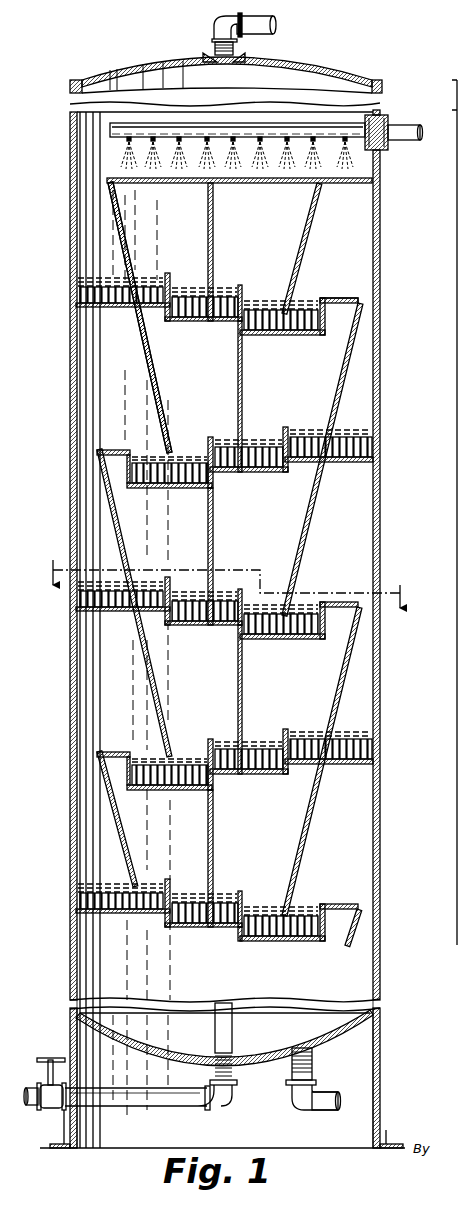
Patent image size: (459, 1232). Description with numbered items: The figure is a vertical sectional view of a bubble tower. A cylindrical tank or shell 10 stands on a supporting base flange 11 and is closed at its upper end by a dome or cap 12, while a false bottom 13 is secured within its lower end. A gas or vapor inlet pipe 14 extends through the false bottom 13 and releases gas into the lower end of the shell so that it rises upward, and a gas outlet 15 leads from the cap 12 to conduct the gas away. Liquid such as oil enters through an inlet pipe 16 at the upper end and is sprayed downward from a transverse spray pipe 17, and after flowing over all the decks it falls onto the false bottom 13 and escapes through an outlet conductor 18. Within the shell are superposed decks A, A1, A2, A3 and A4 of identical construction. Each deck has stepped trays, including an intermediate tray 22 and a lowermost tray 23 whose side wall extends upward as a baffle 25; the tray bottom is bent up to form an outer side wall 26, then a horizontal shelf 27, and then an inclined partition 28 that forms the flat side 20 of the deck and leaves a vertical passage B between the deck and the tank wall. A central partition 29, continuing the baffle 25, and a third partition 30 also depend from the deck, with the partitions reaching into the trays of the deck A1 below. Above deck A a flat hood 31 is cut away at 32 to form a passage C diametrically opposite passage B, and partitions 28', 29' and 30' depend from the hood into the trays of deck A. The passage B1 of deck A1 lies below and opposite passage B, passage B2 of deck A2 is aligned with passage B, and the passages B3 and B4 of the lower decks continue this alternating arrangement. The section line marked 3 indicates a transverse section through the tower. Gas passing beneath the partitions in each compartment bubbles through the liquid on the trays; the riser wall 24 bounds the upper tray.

The tank or shell 10 is at (378, 360).
The supporting base flange 11 is at (387, 1138).
The dome or cap 12 is at (335, 70).
The false bottom 13 is at (165, 1050).
The gas or vapor inlet pipe 14 is at (168, 1103).
The gas outlet 15 is at (270, 32).
The inlet pipe 16 is at (395, 125).
The spray pipe 17 is at (262, 130).
The outlet conductor 18 is at (328, 1097).
The flat side 20 is at (383, 330).
The intermediate tray 22 is at (202, 322).
The lowermost tray 23 is at (278, 337).
The riser wall 24 is at (168, 272).
The baffle 25 is at (243, 286).
The outer side wall 26 is at (322, 333).
The shelf 27 is at (333, 298).
The inclined partition 28 is at (325, 459).
The inclined partition 28' is at (140, 317).
The central partition 29 is at (259, 396).
The central partition 29' is at (232, 252).
The third partition 30 is at (150, 574).
The third partition 30' is at (313, 248).
The hood 31 is at (258, 184).
The cut away portion 32 is at (110, 188).
The section line 3- 3 is at (225, 583).
The uppermost deck A is at (345, 293).
The vertical passage B is at (368, 304).
The deck A1 is at (365, 470).
The passage B1 is at (95, 473).
The deck A2 is at (343, 600).
The passage B2 is at (360, 666).
The deck A3 is at (358, 763).
The stage B3 is at (97, 832).
The deck A4 is at (343, 905).
The stage B4 is at (358, 950).
The passage C is at (90, 216).